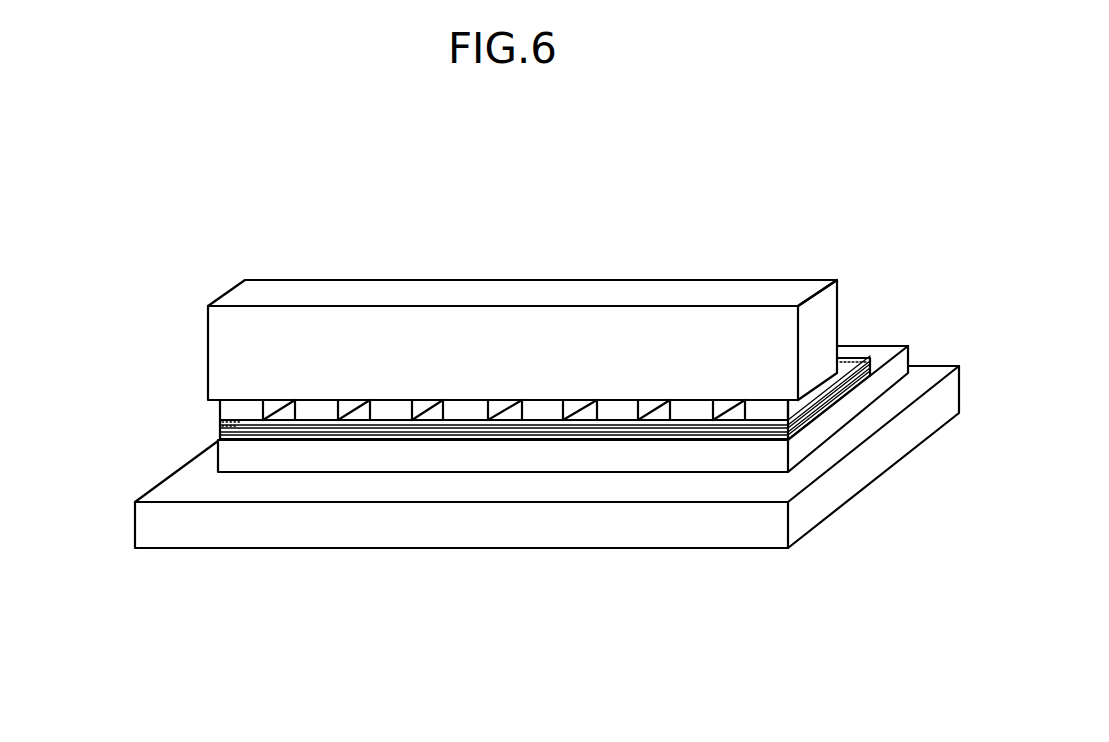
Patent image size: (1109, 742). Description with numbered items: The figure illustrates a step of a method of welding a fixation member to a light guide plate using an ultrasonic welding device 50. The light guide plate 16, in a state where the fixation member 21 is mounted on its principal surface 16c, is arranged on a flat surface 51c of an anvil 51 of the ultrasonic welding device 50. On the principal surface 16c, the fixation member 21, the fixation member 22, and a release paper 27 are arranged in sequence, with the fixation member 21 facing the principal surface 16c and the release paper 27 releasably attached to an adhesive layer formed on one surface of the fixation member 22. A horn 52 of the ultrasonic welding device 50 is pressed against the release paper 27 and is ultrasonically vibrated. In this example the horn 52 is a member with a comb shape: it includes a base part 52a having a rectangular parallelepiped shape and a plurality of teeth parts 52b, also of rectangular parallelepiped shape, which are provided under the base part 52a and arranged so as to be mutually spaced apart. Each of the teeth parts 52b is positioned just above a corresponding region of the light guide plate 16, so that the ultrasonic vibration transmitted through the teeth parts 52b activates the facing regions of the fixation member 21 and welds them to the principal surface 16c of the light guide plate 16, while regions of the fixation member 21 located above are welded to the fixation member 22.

The ultrasonic welding device 50 is at (93, 323).
The horn 52 is at (187, 337).
The base part 52a is at (800, 278).
The teeth parts 52b is at (248, 415).
The anvil 51 is at (138, 468).
The flat surface 51c is at (665, 486).
The fixation member 21 is at (427, 432).
The fixation member 22 is at (487, 430).
The release paper 27 is at (575, 422).
The light guide plate 16 is at (892, 335).
The principal surface 16c is at (870, 355).